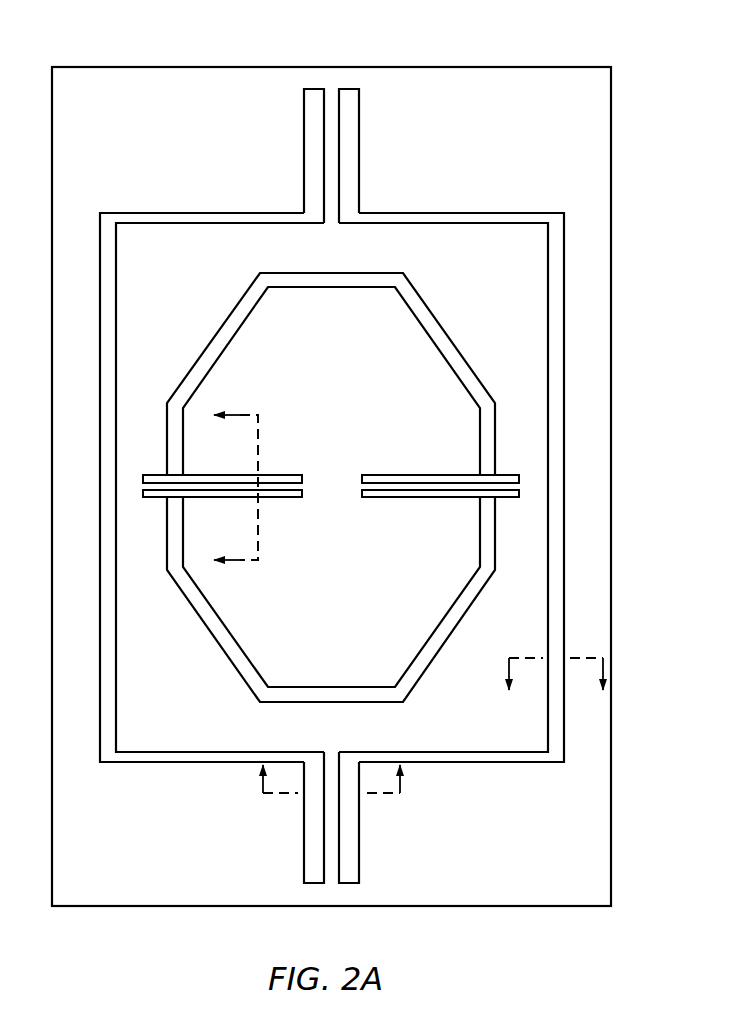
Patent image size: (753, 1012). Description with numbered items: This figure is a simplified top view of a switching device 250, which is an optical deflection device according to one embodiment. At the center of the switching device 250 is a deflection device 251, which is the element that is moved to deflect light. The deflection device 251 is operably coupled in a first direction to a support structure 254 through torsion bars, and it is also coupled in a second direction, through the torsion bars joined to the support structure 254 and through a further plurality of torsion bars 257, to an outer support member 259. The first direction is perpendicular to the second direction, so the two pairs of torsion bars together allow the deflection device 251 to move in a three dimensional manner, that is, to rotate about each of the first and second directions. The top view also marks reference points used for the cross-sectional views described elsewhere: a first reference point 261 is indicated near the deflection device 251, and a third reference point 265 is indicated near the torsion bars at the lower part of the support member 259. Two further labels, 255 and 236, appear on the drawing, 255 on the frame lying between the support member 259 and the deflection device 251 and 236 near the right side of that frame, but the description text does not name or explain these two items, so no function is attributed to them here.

The switching device 250 is at (376, 459).
The support member 259 is at (331, 462).
The torsion bars 257 is at (374, 156).
The outer ring element 255 is at (332, 468).
The deflection device 251 is at (342, 487).
The first reference point 261 is at (312, 424).
The support structure 254 is at (418, 473).
The ring edge region 236 is at (643, 622).
The third reference point 265 is at (387, 817).